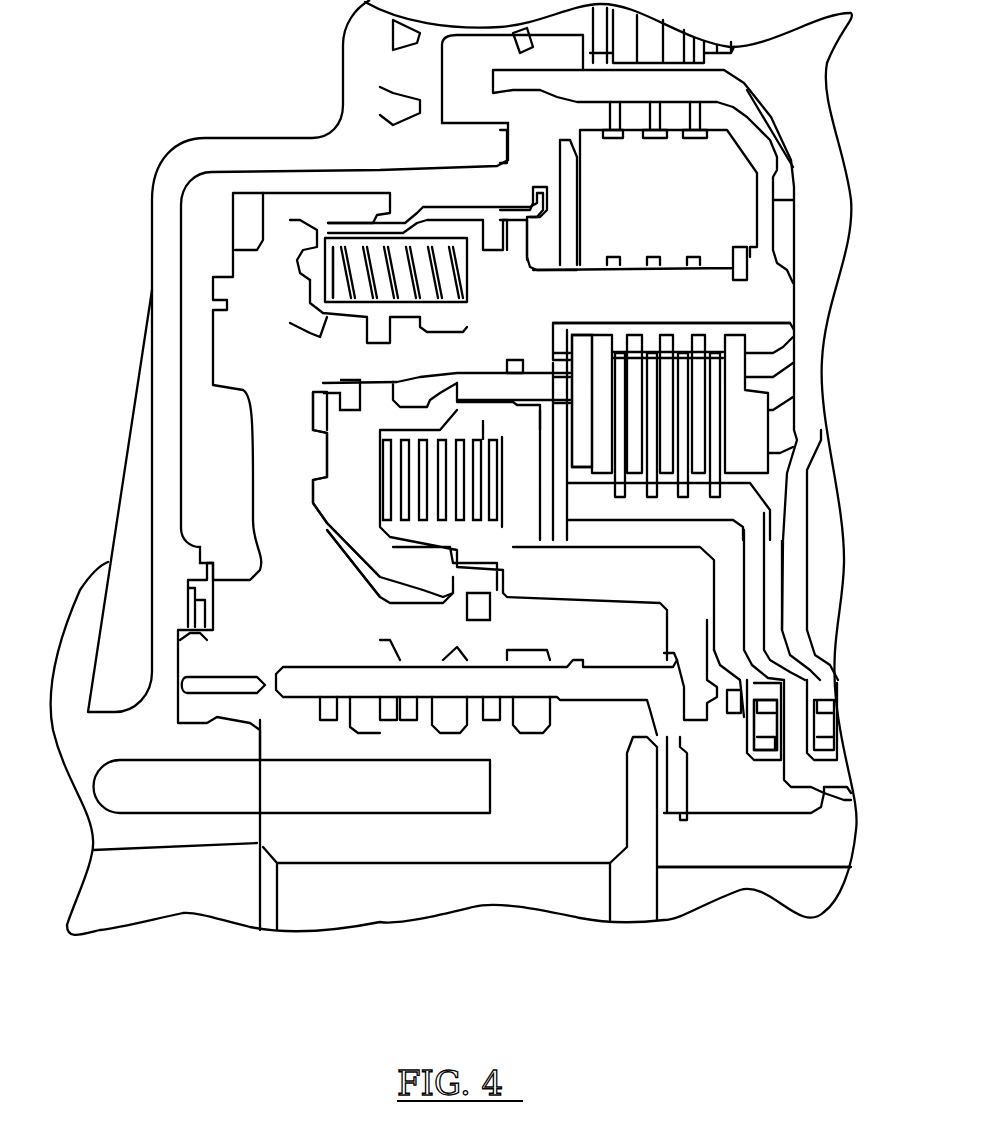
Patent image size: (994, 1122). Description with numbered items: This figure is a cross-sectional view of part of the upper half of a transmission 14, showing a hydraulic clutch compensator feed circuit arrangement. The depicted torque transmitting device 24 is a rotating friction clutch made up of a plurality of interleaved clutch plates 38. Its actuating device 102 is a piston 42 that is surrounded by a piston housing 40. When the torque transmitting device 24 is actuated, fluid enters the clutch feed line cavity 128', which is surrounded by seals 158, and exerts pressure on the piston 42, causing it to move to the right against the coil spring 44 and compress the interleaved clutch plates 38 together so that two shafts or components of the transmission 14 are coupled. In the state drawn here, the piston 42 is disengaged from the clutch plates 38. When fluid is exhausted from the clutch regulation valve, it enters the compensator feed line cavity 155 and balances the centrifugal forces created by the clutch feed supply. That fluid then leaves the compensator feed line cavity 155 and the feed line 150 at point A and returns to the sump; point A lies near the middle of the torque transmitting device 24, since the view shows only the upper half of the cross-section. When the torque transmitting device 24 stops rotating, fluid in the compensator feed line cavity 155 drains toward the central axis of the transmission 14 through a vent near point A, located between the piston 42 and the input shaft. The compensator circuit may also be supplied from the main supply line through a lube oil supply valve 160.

The transmission 14 is at (180, 80).
The torque transmitting device 24 is at (315, 370).
The seals 158 is at (323, 392).
The piston housing 40 is at (277, 423).
The coil spring 44 is at (385, 480).
The clutch feed line cavity 128' is at (181, 467).
The actuating device 102 is at (340, 553).
The piston 42 is at (480, 387).
The interleaved clutch plates 38 is at (727, 430).
The compensator feed line cavity 155 is at (490, 437).
The point A is at (734, 643).
The feed line 150 is at (744, 717).
The lube oil supply valve 160 is at (724, 880).